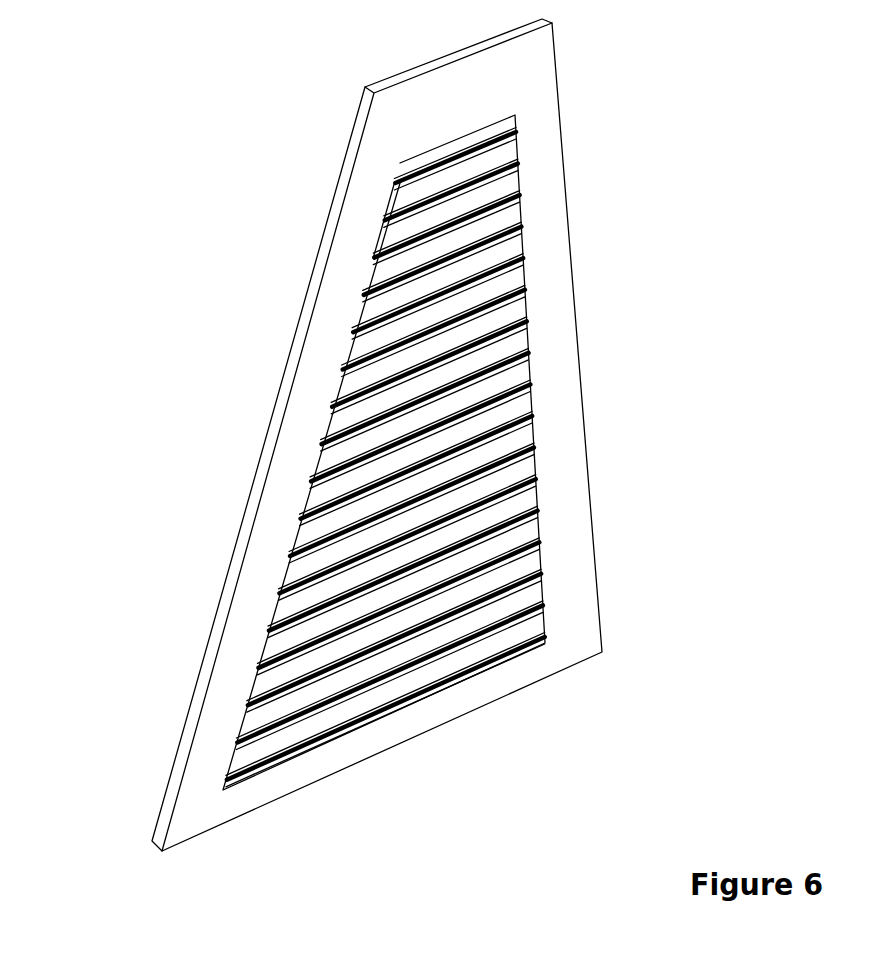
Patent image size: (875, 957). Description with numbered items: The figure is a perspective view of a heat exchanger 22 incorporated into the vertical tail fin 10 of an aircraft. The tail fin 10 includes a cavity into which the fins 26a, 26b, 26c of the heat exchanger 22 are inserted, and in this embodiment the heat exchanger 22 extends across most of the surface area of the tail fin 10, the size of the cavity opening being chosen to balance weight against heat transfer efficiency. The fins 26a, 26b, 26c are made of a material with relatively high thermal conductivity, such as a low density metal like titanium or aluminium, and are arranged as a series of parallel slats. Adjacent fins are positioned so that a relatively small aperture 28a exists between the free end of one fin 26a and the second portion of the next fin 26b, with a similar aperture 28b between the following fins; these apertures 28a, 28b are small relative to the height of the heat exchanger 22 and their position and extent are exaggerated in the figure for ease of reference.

The vertical tail fin 10 is at (577, 657).
The heat exchanger 22 is at (426, 439).
The fin 26a is at (503, 128).
The fin 26b is at (505, 153).
The fin 26c is at (505, 185).
The aperture 28a is at (403, 185).
The aperture 28b is at (388, 223).